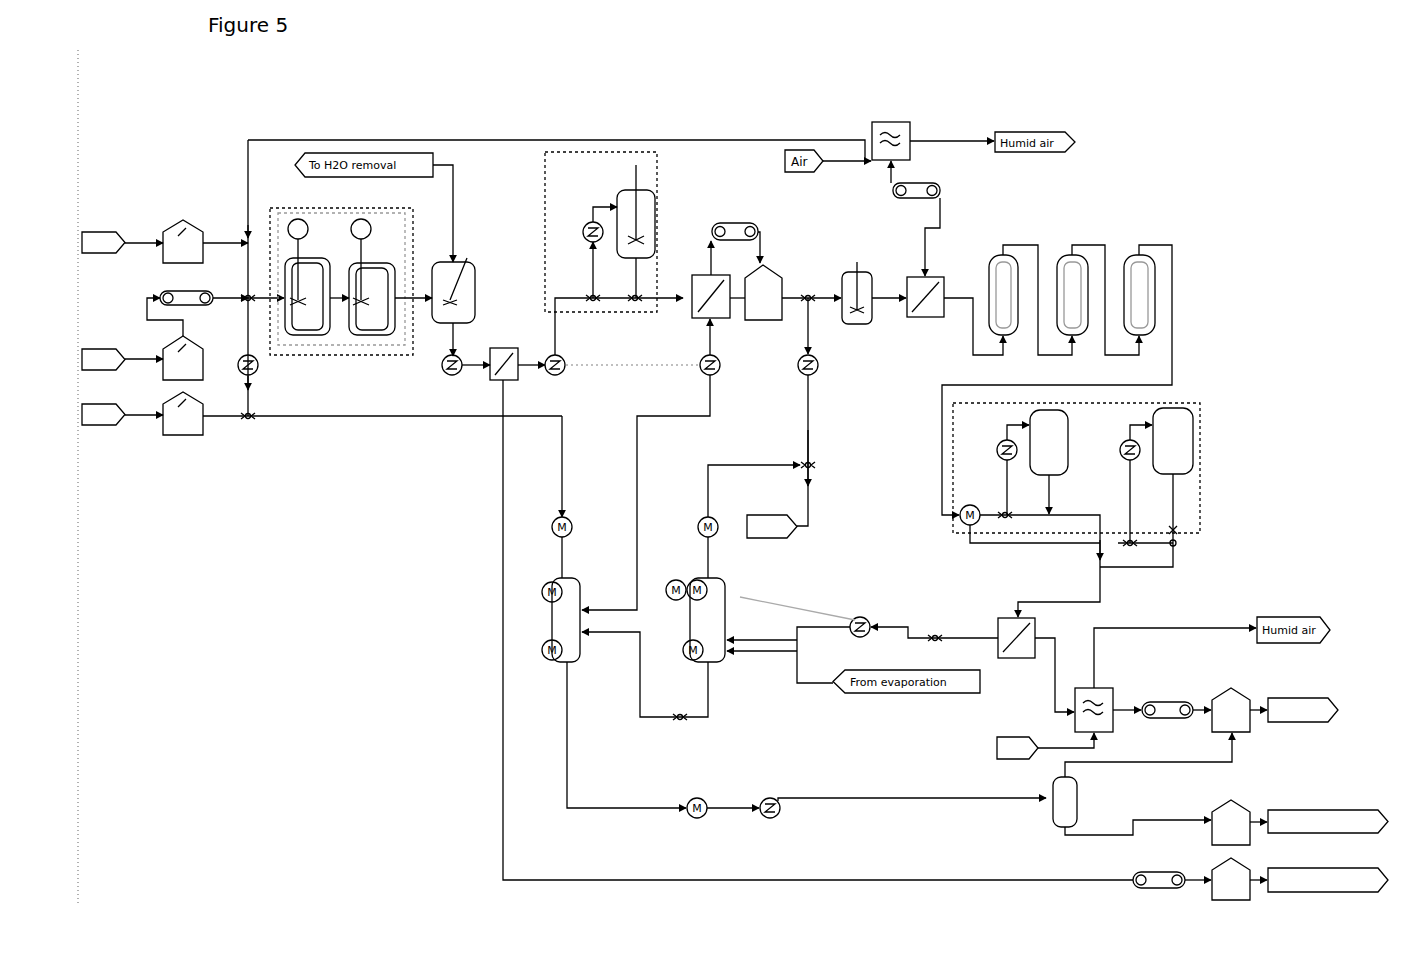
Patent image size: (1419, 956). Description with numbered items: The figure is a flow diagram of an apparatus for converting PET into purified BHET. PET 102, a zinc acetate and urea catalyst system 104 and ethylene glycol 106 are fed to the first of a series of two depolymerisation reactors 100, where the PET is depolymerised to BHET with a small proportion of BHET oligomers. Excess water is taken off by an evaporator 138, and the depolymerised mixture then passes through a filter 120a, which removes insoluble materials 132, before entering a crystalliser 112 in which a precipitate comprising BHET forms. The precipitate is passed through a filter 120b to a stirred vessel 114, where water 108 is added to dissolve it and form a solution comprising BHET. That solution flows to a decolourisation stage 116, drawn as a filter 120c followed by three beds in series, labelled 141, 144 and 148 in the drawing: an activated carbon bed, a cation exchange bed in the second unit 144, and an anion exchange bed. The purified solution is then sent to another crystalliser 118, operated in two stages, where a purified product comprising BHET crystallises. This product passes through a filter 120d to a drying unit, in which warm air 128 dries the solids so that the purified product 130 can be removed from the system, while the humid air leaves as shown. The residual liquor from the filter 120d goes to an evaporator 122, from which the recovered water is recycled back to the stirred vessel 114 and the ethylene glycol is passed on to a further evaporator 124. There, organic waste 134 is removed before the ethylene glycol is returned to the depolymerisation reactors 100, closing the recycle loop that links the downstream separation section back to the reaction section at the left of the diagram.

The depolymerisation reactors 100 is at (341, 281).
The PET 102 is at (142, 364).
The catalyst system 104 is at (142, 247).
The ethylene glycol 106 is at (142, 419).
The water 108 is at (772, 535).
The crystalliser 112 is at (601, 232).
The stirred vessel 114 is at (857, 305).
The decolourisation stage 116 is at (1057, 365).
The crystalliser 118 is at (1076, 510).
The filter 120a is at (513, 373).
The filter 120b is at (737, 280).
The filter 120c is at (925, 307).
The filter 120d is at (1016, 649).
The evaporator 122 is at (733, 575).
The evaporator 124 is at (568, 601).
The warm air 128 is at (1045, 758).
The purified product 130 is at (1275, 717).
The insoluble materials 132 is at (1300, 885).
The organic waste 134 is at (1300, 826).
The evaporator 138 is at (454, 298).
The adsorption column 141 is at (1003, 314).
The second unit 144 is at (1072, 314).
The adsorption column 148 is at (1139, 314).